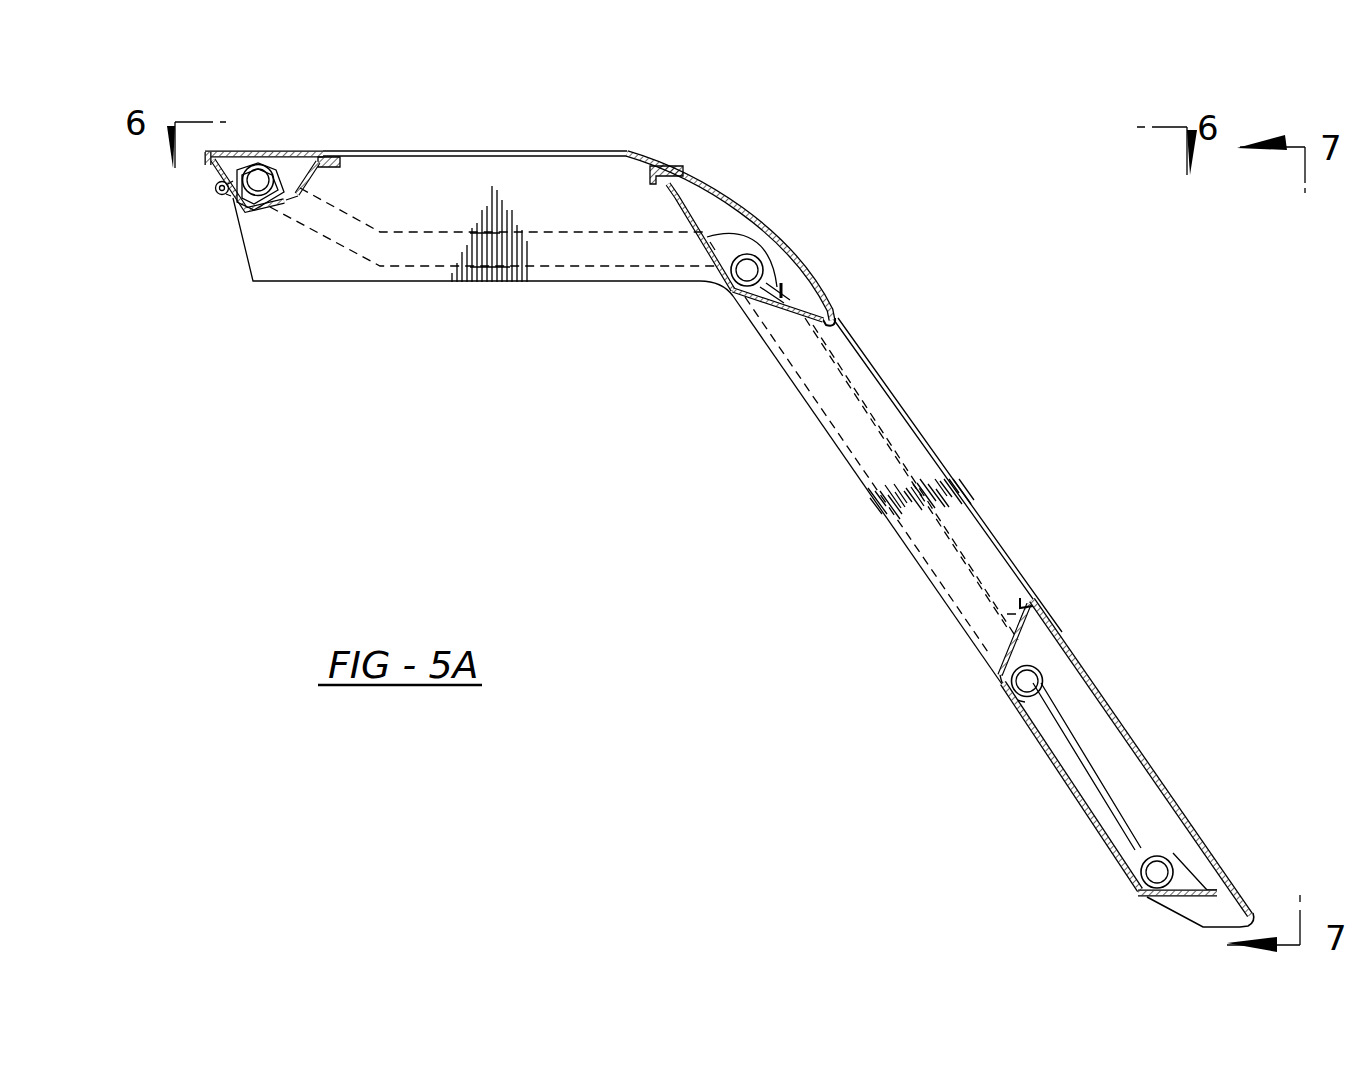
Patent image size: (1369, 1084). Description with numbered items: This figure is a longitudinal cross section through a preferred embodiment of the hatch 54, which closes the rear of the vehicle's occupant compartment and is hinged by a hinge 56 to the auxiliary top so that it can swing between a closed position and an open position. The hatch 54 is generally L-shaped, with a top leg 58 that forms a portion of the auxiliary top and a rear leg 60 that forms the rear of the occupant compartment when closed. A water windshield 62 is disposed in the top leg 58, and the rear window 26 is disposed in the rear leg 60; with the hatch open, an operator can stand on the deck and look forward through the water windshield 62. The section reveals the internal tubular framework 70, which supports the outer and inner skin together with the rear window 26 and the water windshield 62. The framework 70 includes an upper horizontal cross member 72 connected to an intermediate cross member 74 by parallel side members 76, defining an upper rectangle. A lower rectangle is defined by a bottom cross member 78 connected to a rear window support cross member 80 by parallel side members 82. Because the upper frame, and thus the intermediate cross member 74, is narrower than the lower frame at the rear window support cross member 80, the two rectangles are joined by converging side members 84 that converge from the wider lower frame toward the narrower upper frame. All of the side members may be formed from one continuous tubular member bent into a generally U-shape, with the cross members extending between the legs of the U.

The rear window 26 is at (945, 463).
The hatch 54 is at (958, 296).
The hinge 56 is at (220, 196).
The top leg 58 is at (300, 148).
The rear leg 60 is at (1133, 740).
The water windshield 62 is at (500, 151).
The tubular framework 70 is at (628, 292).
The upper horizontal cross member 72 is at (298, 197).
The intermediate cross member 74 is at (760, 262).
The parallel side members 76 is at (595, 233).
The bottom cross member 78 is at (1143, 880).
The rear window support cross member 80 is at (1032, 676).
The parallel side members 82 is at (1042, 720).
The converging side members 84 is at (822, 414).